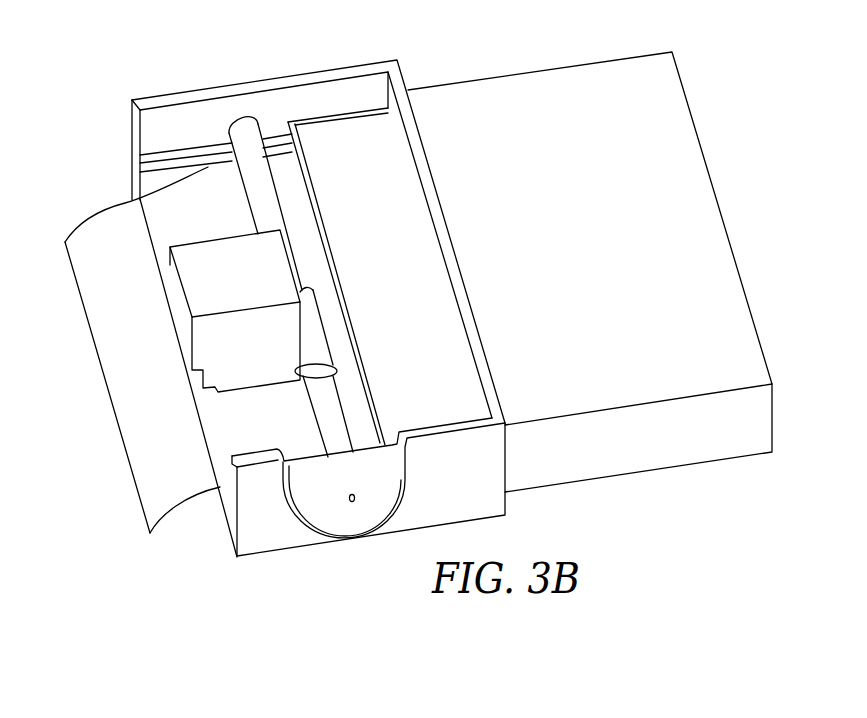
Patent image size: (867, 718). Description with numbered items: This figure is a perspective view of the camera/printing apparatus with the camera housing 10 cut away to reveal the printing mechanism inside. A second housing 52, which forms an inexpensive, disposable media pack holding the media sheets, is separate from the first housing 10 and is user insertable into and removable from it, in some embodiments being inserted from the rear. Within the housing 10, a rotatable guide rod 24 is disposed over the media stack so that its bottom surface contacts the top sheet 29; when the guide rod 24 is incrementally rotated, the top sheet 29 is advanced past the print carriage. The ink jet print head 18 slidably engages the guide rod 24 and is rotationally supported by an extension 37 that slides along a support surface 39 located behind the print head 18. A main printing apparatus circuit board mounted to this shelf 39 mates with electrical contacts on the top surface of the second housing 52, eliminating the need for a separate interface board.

The housing 10 is at (258, 81).
The ink jet print head 18 is at (250, 283).
The guide rod 24 is at (240, 132).
The top sheet 29 is at (130, 378).
The extension 37 is at (346, 342).
The support surface 39 is at (357, 128).
The second housing 52 is at (593, 90).